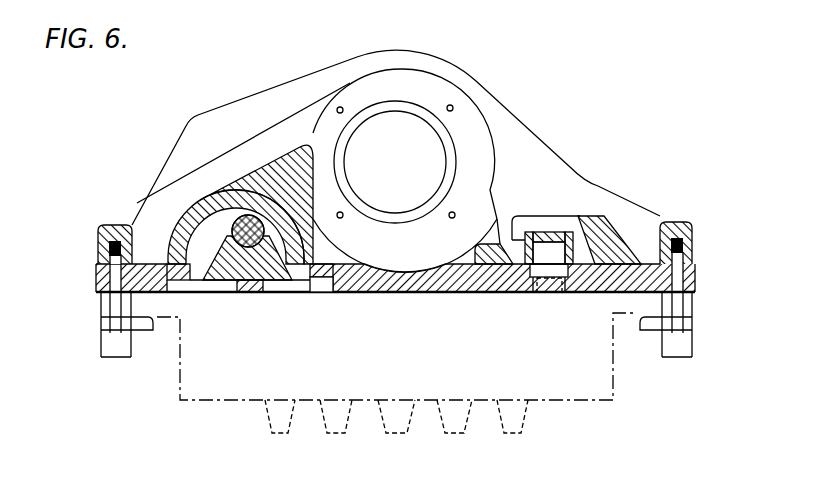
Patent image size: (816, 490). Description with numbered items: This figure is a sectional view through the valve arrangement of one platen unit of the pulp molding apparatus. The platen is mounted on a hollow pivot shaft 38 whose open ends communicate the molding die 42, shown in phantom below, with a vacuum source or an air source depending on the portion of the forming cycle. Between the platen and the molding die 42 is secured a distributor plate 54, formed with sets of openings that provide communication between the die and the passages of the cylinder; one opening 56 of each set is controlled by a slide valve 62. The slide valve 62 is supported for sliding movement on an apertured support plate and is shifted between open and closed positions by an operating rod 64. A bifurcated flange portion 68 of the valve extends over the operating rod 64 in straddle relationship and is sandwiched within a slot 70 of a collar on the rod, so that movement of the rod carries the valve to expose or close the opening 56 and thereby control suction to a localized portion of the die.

The hollow pivot shaft 38 is at (345, 168).
The molding die 42 is at (613, 370).
The distributor plate 54 is at (450, 290).
The opening 56 is at (313, 286).
The slide valve 62 is at (197, 294).
The operating rod 64 is at (258, 238).
The bifurcated flange portion 68 is at (226, 233).
The slot 70 is at (232, 192).